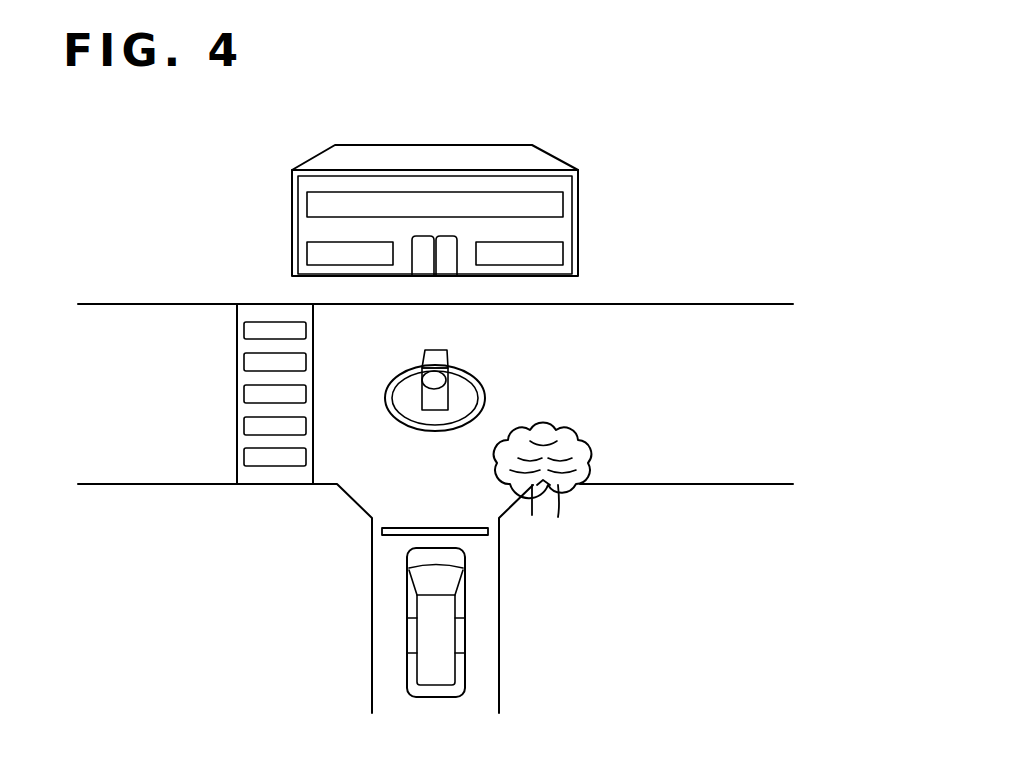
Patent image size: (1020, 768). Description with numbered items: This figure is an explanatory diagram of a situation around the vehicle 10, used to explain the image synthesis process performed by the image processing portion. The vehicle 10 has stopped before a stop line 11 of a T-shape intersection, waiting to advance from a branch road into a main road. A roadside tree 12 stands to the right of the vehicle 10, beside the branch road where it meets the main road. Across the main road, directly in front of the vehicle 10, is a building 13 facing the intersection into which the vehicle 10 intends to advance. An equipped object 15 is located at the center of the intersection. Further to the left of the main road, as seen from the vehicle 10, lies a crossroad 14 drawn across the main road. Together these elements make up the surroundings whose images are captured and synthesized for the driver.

The vehicle 10 is at (423, 697).
The stop line 11 is at (450, 527).
The roadside tree 12 is at (573, 443).
The building 13 is at (578, 222).
The crossroad 14 is at (243, 409).
The equipped object 15 is at (443, 350).